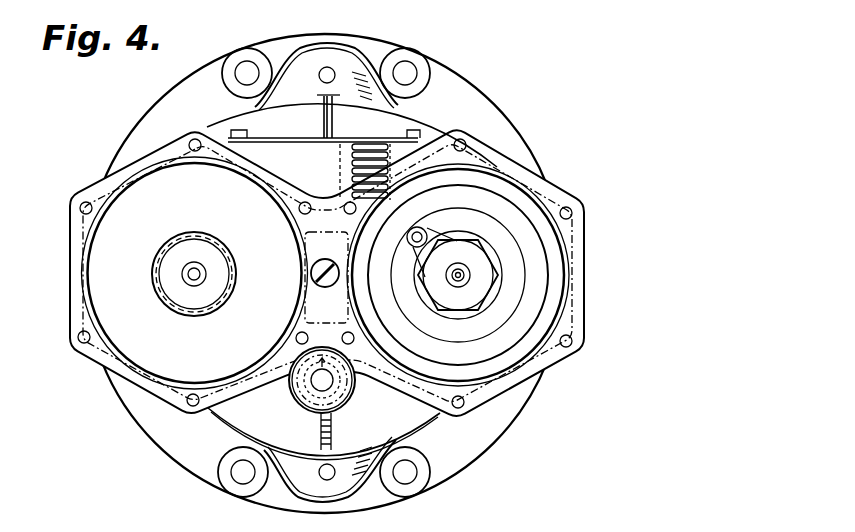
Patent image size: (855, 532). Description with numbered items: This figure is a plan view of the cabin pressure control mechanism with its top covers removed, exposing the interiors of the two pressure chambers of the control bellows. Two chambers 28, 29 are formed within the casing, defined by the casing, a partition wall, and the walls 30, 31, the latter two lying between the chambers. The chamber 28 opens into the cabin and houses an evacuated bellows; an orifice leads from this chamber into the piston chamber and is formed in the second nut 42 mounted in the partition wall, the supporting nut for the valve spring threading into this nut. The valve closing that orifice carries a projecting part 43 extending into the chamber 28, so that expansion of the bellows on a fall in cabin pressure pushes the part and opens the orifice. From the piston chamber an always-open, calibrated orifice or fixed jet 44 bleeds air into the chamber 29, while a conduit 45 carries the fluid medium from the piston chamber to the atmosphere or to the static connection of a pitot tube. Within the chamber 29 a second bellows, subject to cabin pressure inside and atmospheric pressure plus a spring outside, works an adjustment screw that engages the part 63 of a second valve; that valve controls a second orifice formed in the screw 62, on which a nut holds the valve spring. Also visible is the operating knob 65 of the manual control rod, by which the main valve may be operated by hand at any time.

The chamber 28 is at (155, 360).
The chamber 29 is at (550, 327).
The wall 30 is at (307, 258).
The wall 31 is at (352, 293).
The second nut 42 is at (172, 290).
The projecting part 43 is at (200, 275).
The orifice or fixed jet 44 is at (425, 231).
The conduit 45 is at (380, 156).
The screw 62 is at (473, 260).
The part 63 is at (457, 283).
The operating knob 65 is at (350, 387).